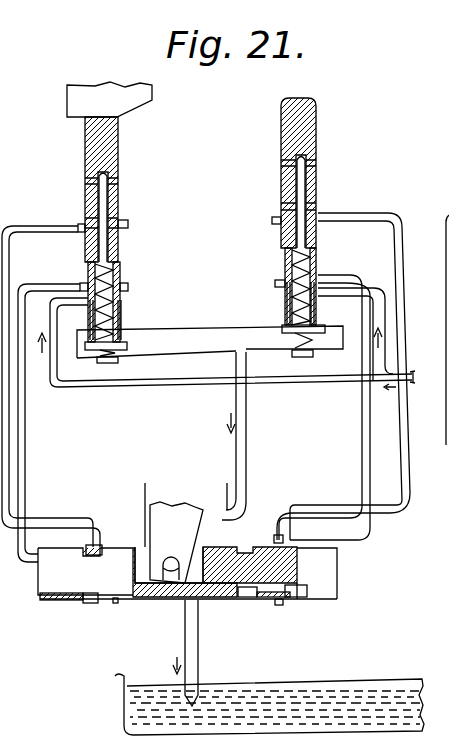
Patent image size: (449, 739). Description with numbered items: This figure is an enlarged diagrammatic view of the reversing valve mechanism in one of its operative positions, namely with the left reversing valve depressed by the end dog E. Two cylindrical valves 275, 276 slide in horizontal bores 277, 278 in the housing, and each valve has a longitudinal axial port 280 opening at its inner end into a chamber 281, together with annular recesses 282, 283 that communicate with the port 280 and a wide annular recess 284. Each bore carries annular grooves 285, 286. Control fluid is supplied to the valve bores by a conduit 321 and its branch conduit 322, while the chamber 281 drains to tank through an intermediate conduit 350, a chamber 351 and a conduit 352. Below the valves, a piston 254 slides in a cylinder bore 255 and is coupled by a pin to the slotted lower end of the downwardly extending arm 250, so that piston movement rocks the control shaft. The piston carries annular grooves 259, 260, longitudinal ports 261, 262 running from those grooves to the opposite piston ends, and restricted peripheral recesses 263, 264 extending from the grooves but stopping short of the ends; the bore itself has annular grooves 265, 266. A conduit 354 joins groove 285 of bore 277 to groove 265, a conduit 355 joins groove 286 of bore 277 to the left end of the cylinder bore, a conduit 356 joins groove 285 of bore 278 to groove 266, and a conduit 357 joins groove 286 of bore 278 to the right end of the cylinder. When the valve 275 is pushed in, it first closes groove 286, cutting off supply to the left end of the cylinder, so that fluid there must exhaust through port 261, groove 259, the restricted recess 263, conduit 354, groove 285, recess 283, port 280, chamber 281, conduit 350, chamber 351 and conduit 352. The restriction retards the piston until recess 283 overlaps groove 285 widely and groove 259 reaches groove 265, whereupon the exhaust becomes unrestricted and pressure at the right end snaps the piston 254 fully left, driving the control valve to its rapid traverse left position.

The arm 250 is at (163, 507).
The piston 254 is at (170, 597).
The cylinder bore 255 is at (117, 604).
The annular groove 259 is at (95, 604).
The annular groove 260 is at (250, 596).
The longitudinal port 261 is at (72, 598).
The longitudinal port 262 is at (295, 590).
The peripheral recess 263 is at (68, 552).
The peripheral recess 264 is at (266, 519).
The annular groove 265 is at (105, 543).
The annular groove 266 is at (281, 537).
The cylindrical valve 275 is at (85, 141).
The cylindrical valve 276 is at (288, 125).
The valve bore 277 is at (89, 264).
The valve bore 278 is at (317, 243).
The axial port 280 is at (104, 199).
The chamber 281 is at (232, 327).
The annular recess 282 is at (118, 181).
The annular recess 283 is at (116, 220).
The wide annular recess 284 is at (122, 312).
The annular groove 285 is at (126, 226).
The annular groove 286 is at (128, 286).
The conduit 321 is at (295, 384).
The branch conduit 322 is at (371, 288).
The intermediate conduit 350 is at (247, 453).
The chamber 351 is at (223, 523).
The conduit 352 is at (195, 673).
The conduit 354 is at (8, 438).
The conduit 355 is at (25, 453).
The conduit 356 is at (400, 443).
The conduit 357 is at (367, 473).